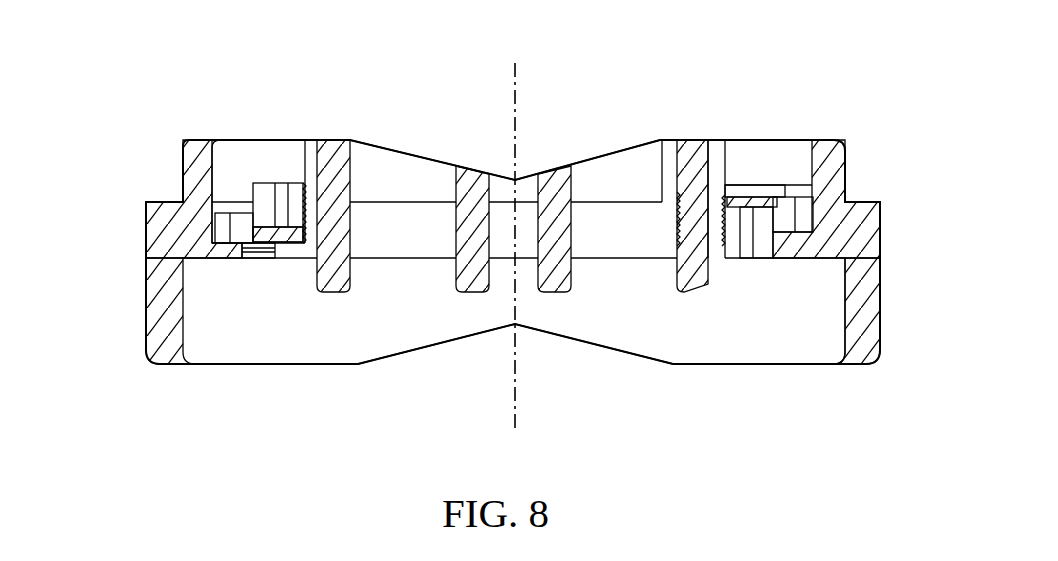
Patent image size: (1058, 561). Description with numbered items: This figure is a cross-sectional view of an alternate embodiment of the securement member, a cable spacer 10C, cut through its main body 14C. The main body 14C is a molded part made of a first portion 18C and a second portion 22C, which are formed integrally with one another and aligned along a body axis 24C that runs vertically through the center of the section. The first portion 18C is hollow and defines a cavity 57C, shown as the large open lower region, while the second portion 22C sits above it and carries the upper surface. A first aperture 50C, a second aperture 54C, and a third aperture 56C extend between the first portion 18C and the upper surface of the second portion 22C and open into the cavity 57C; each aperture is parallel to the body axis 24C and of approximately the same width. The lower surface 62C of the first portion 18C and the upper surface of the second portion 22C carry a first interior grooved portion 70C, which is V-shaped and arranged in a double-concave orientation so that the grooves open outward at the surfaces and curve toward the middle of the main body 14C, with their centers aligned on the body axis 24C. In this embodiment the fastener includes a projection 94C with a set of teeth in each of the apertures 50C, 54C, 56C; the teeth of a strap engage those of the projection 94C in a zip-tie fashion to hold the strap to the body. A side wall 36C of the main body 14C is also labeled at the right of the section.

The cable spacer 10C is at (752, 78).
The main body 14C is at (128, 126).
The first portion 18C is at (144, 291).
The second portion 22C is at (180, 173).
The body axis 24C is at (515, 111).
The side wall 36C is at (880, 232).
The first aperture 50C is at (311, 139).
The second aperture 54C is at (665, 139).
The third aperture 56C is at (717, 159).
The cavity 57C is at (727, 337).
The lower surface 62C is at (175, 366).
The first interior grooved portion 70C is at (420, 137).
The projection 94C is at (290, 196).